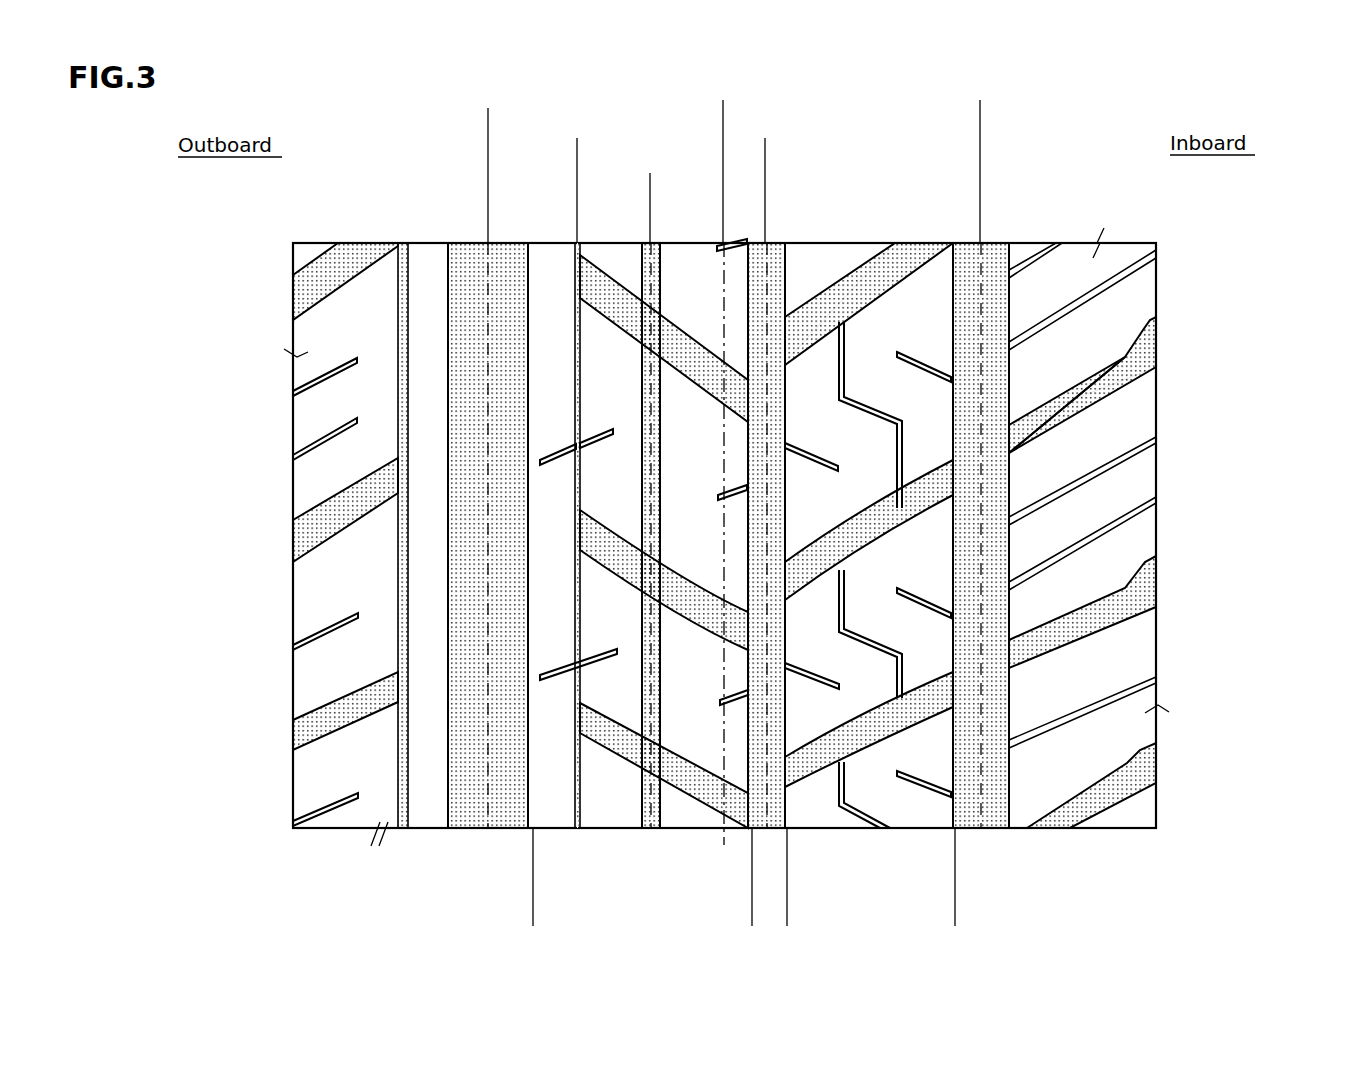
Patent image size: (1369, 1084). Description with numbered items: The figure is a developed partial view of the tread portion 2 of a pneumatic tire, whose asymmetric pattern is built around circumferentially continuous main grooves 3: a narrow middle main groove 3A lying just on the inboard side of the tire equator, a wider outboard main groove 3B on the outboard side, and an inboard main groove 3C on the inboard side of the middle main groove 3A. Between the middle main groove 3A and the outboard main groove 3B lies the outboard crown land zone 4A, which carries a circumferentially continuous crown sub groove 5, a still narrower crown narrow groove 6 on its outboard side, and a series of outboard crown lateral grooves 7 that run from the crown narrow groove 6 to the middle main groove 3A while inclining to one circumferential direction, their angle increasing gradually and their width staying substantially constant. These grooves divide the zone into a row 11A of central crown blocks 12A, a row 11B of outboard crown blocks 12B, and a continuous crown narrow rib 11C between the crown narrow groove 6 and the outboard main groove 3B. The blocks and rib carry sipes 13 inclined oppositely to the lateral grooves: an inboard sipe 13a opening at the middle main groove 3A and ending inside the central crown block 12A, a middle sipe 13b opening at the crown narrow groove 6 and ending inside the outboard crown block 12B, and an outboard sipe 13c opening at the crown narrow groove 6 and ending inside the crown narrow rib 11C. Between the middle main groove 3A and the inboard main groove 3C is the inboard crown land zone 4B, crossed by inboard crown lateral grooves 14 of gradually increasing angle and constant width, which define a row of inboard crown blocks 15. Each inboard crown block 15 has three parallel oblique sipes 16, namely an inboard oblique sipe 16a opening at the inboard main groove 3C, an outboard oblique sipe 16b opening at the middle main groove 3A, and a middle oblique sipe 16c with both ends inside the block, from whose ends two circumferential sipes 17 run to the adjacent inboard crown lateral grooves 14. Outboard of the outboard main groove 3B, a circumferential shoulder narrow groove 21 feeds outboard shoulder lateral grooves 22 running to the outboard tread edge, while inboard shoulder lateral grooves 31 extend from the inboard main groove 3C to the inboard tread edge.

The tread portion 2 is at (1068, 218).
The main grooves 3 is at (856, 585).
The middle main groove 3A is at (787, 632).
The outboard main groove 3B is at (472, 829).
The inboard main groove 3C is at (1005, 690).
The outboard crown land zone 4A is at (752, 915).
The inboard crown land zone 4B is at (955, 915).
The crown sub groove 5 is at (305, 534).
The crown narrow groove 6 is at (573, 697).
The outboard crown lateral grooves 7 is at (622, 558).
The row of central crown blocks 11A is at (1155, 535).
The row of outboard crown blocks 11B is at (431, 539).
The crown narrow rib 11C is at (622, 618).
The central crown blocks 12A is at (1155, 535).
The outboard crown blocks 12B is at (431, 539).
The sipes 13 is at (441, 465).
The inboard sipe 13a is at (747, 505).
The middle sipe 13b is at (582, 437).
The outboard sipe 13c is at (540, 452).
The inboard crown lateral grooves 14 is at (873, 243).
The inboard crown blocks 15 is at (1012, 511).
The oblique sipes 16 is at (1161, 408).
The inboard oblique sipe 16a is at (1012, 357).
The outboard oblique sipe 16b is at (1035, 470).
The middle oblique sipe 16c is at (1012, 425).
The circumferential sipes 17 is at (912, 243).
The shoulder narrow groove 21 is at (403, 829).
The outboard shoulder lateral grooves 22 is at (333, 715).
The inboard shoulder lateral grooves 31 is at (1105, 611).